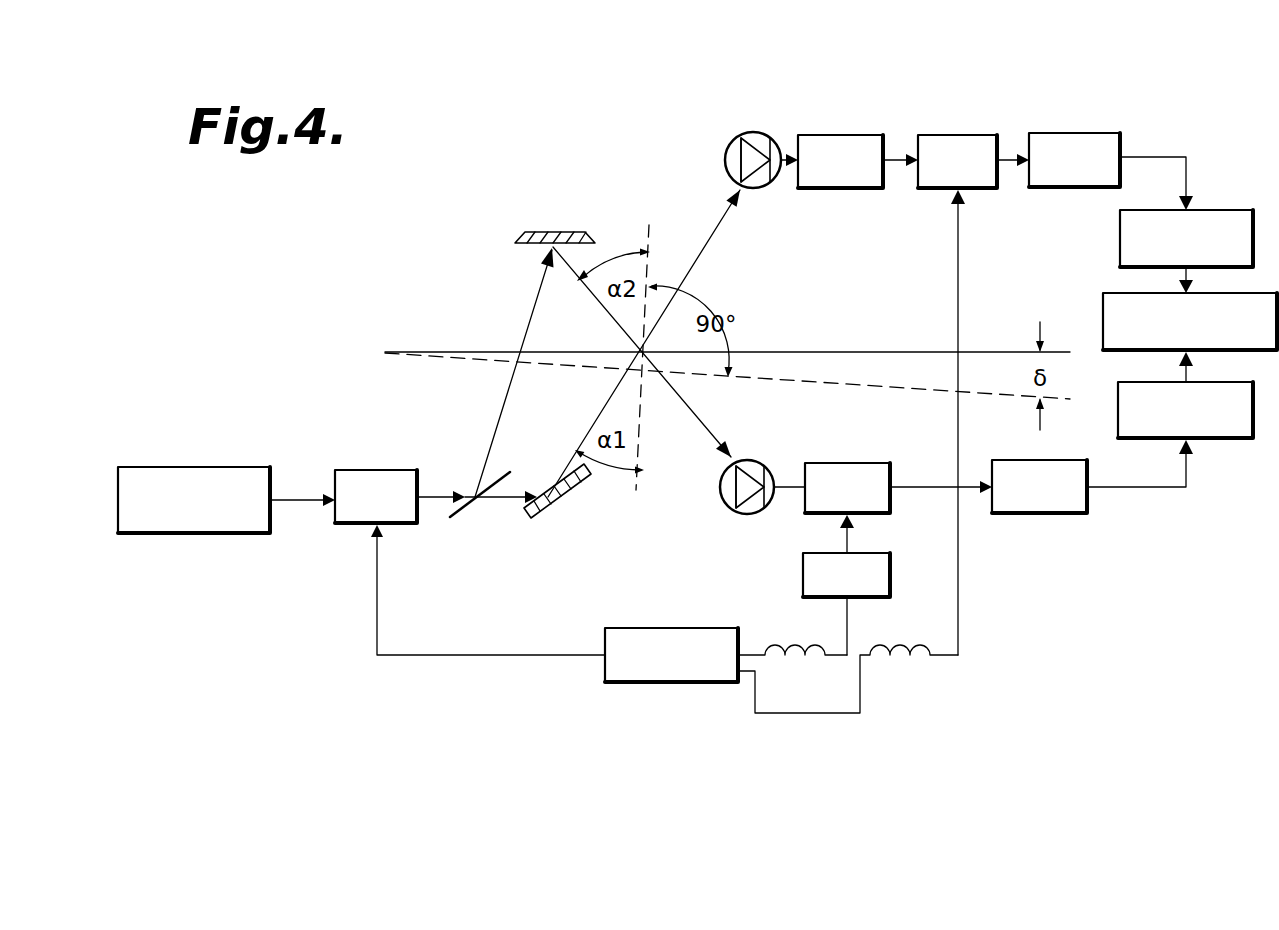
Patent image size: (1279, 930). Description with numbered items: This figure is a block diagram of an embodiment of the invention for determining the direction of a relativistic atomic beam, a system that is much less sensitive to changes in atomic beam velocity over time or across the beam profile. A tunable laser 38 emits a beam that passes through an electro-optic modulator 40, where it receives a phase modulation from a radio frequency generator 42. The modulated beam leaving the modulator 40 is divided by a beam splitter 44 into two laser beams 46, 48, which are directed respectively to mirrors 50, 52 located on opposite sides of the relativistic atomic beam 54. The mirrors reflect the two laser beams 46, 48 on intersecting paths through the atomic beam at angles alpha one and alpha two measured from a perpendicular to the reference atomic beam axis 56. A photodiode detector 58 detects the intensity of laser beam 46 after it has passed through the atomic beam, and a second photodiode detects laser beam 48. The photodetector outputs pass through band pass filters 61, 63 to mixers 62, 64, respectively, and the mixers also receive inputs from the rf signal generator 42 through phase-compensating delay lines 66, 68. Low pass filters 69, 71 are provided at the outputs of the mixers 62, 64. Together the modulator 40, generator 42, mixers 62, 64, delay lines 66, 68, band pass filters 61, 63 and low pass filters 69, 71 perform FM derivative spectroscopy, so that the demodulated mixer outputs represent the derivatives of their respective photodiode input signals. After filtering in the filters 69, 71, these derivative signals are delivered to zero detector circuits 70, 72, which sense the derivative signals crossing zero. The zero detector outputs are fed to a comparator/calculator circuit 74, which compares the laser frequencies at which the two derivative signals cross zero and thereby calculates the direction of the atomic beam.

The tunable laser 38 is at (197, 535).
The electro-optic modulator 40 is at (351, 525).
The radio frequency generator 42 is at (636, 683).
The beam splitter 44 is at (466, 520).
The laser beam 46 is at (529, 495).
The laser beam 48 is at (500, 390).
The mirror 50 is at (576, 506).
The mirror 52 is at (514, 238).
The relativistic atomic beam 54 is at (848, 351).
The reference atomic beam axis 56 is at (860, 389).
The photodiode detector 58 is at (762, 132).
The band pass filter 61 is at (832, 135).
The mixer 62 is at (961, 135).
The band pass filter 63 is at (803, 573).
The mixer 64 is at (875, 513).
The delay line 66 is at (893, 636).
The delay line 68 is at (788, 636).
The low pass filter 69 is at (1087, 133).
The zero detector circuit 70 is at (1120, 234).
The low pass filter 71 is at (1073, 514).
The zero detector circuit 72 is at (1221, 440).
The comparator/calculator circuit 74 is at (1103, 311).